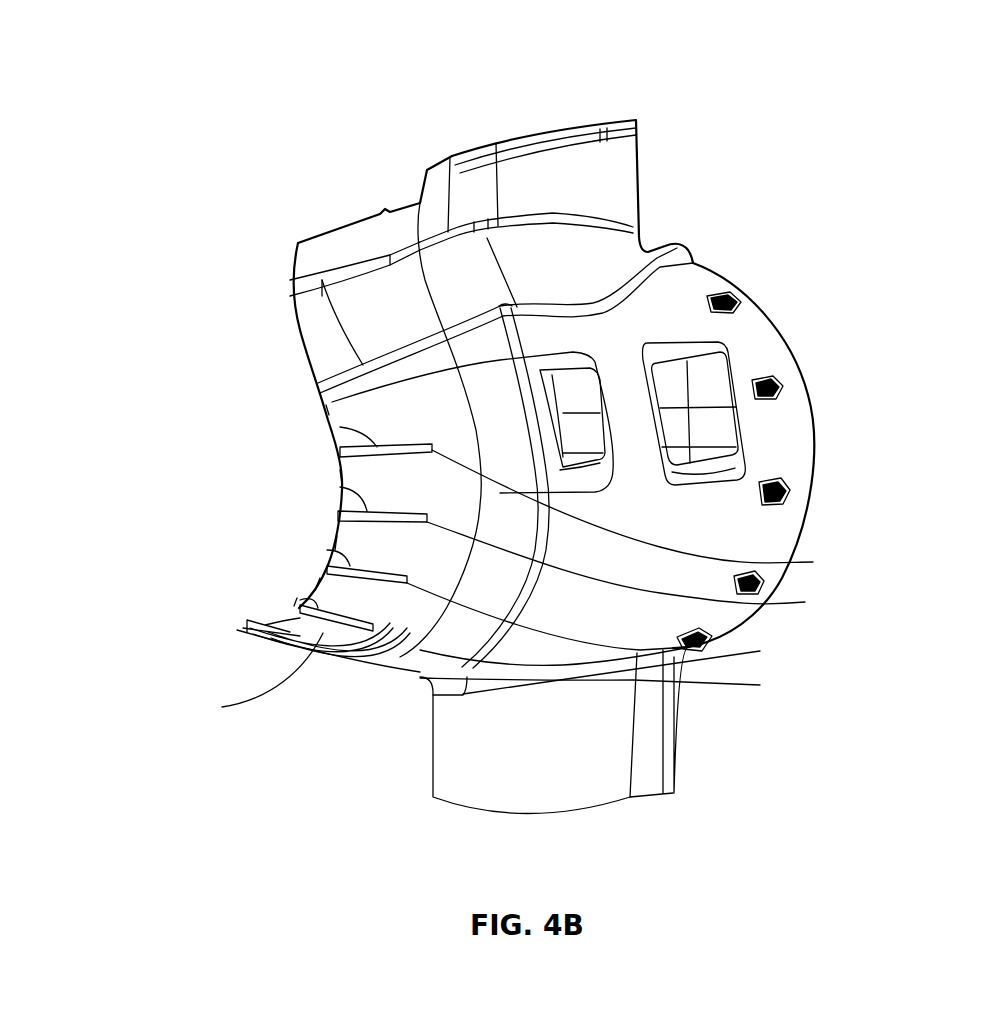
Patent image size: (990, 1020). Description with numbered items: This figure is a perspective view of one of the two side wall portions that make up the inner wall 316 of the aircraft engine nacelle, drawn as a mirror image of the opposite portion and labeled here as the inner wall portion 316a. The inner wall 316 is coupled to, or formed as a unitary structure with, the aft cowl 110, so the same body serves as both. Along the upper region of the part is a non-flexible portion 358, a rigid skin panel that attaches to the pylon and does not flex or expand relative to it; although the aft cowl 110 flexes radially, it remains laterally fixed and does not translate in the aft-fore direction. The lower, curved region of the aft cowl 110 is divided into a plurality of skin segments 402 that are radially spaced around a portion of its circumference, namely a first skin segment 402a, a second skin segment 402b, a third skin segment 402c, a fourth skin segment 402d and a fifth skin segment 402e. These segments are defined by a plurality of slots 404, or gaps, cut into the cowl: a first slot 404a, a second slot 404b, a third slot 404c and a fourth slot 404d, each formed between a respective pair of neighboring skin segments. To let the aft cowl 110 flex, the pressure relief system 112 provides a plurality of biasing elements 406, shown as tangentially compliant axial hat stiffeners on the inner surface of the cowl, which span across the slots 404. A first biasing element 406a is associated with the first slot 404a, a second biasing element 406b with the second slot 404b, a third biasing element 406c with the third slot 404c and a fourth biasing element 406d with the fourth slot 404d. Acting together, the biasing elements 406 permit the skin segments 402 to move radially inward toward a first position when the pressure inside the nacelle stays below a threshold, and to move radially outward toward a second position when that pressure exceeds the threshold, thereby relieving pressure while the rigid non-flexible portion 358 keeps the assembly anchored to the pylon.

The inner wall 316 is at (141, 57).
The first inner wall portion 316a is at (186, 124).
The non-flexible portions 358 is at (358, 247).
The skin segments 402 is at (203, 526).
The first skin segment 402a is at (293, 602).
The second skin segment 402b is at (313, 583).
The third skin segment 402c is at (327, 543).
The fourth skin segment 402d is at (333, 477).
The fifth skin segment 402e is at (327, 410).
The slots 404 is at (248, 529).
The first slot 404a is at (247, 620).
The second slot 404b is at (330, 562).
The third slot 404c is at (333, 488).
The fourth slot 404d is at (333, 418).
The biasing elements 406 is at (679, 496).
The first biasing element 406a is at (680, 685).
The second biasing element 406b is at (690, 657).
The third biasing element 406c is at (673, 497).
The fourth biasing element 406d is at (681, 435).
The aft cowl 110 is at (222, 707).
The pressure relief system 112 is at (291, 684).